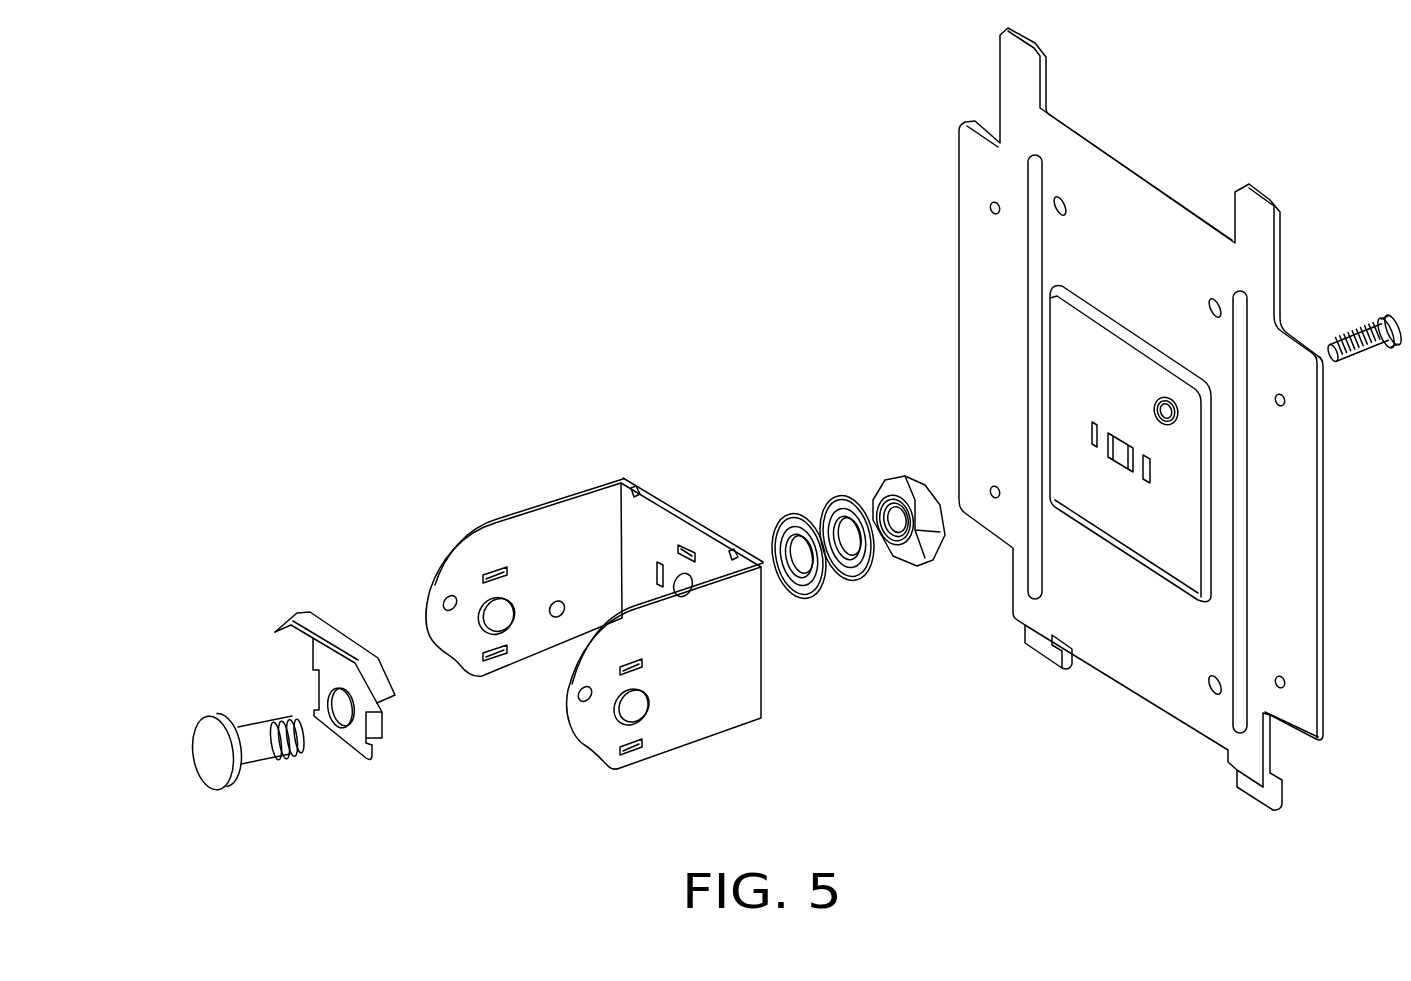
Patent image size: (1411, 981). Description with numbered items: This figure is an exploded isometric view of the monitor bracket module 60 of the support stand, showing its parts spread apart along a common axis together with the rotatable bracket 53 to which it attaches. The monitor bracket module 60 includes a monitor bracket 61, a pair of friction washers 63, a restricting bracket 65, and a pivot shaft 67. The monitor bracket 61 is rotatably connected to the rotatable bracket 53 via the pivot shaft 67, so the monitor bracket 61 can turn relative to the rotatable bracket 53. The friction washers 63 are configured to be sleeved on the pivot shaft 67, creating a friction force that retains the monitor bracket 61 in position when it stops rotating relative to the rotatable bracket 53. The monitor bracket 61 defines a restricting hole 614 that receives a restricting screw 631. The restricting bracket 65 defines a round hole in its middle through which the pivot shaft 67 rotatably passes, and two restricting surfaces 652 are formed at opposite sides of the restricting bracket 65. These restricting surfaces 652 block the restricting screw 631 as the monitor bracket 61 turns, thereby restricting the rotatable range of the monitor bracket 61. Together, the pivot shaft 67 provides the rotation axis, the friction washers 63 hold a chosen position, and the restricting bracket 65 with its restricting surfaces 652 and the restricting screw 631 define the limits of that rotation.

The monitor bracket module 60 is at (613, 313).
The monitor bracket 61 is at (1120, 210).
The restricting hole 614 is at (1153, 400).
The restricting screw 631 is at (1355, 335).
The rotatable bracket 53 is at (547, 495).
The friction washers 63 is at (867, 580).
The restricting bracket 65 is at (292, 616).
The restricting surfaces 652 is at (390, 685).
The pivot shaft 67 is at (247, 722).